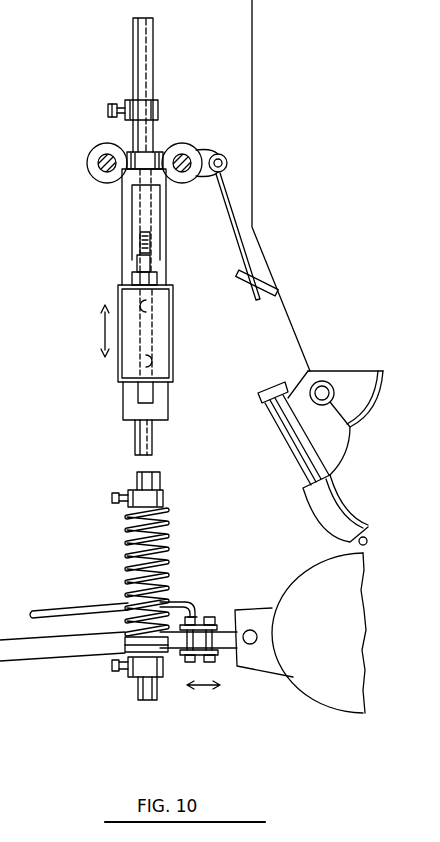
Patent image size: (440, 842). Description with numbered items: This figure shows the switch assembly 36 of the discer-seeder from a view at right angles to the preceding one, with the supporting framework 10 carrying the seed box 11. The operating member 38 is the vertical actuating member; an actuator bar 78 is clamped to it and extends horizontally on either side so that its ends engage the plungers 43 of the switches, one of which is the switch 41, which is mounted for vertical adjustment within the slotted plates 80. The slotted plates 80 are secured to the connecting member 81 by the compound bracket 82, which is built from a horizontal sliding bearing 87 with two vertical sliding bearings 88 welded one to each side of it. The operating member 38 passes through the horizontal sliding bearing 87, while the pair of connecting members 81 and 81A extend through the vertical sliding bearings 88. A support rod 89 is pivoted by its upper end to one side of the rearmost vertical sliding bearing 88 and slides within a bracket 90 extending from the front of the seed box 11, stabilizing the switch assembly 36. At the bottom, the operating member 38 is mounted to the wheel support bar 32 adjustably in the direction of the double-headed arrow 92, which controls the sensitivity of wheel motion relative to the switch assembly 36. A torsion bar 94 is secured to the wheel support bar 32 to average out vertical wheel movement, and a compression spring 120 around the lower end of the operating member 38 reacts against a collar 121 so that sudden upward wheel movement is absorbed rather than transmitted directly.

The supporting framework 10 is at (320, 658).
The seed box 11 is at (337, 96).
The wheel support bar 32 is at (93, 648).
The switch assembly 36 is at (3, 18).
The operating member 38 is at (153, 48).
The switch 41 is at (163, 332).
The plunger 43 is at (152, 260).
The actuator bar 78 is at (150, 237).
The slotted plate 80 is at (128, 232).
The connecting member 81 is at (180, 155).
The connecting member 81A is at (106, 150).
The compound bracket 82 is at (145, 160).
The horizontal sliding bearing 87 is at (156, 150).
The vertical sliding bearing 88 is at (96, 165).
The support rod 89 is at (236, 203).
The bracket 90 is at (272, 278).
The double-headed arrow 92 is at (194, 693).
The torsion bar 94 is at (107, 605).
The compression spring 120 is at (128, 538).
The collar 121 is at (116, 498).